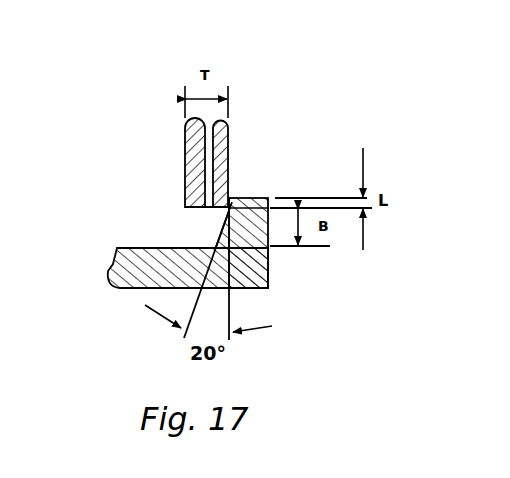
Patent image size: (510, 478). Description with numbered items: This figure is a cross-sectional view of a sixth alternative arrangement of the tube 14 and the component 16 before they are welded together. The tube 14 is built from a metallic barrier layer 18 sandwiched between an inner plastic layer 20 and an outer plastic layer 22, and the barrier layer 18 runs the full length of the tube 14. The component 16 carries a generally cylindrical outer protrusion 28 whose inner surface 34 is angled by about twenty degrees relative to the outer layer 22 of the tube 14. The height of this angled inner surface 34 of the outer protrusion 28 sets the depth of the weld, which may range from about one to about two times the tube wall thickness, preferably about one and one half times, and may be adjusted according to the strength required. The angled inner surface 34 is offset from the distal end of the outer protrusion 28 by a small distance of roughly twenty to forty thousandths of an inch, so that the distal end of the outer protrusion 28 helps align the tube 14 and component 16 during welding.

The tube 14 is at (188, 145).
The component 16 is at (105, 268).
The metallic barrier layer 18 is at (213, 118).
The inner plastic layer 20 is at (188, 140).
The outer plastic layer 22 is at (224, 131).
The outer protrusion 28 is at (254, 198).
The inner surface 34 is at (217, 240).